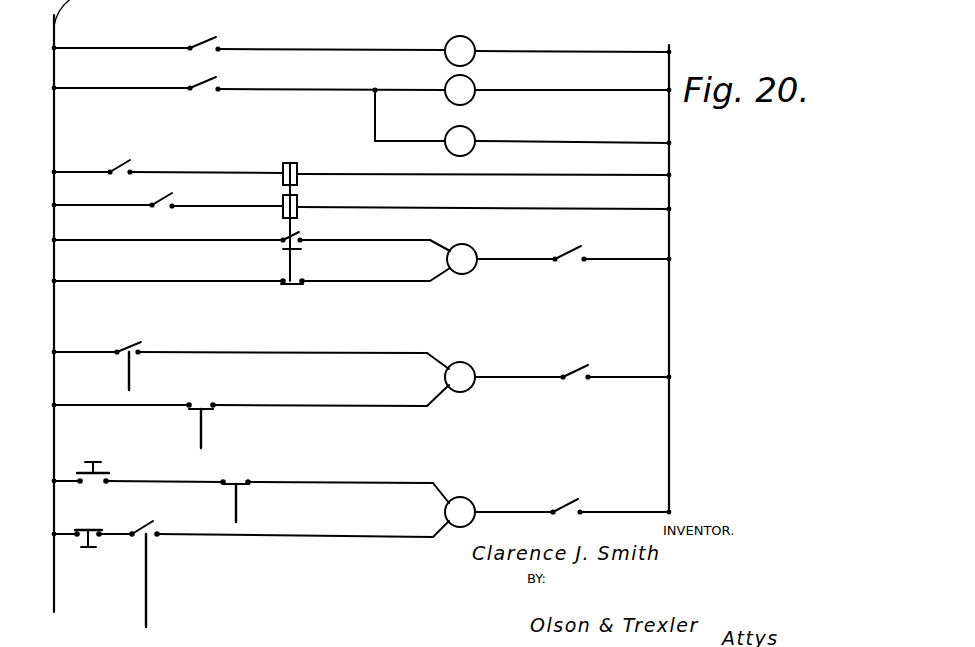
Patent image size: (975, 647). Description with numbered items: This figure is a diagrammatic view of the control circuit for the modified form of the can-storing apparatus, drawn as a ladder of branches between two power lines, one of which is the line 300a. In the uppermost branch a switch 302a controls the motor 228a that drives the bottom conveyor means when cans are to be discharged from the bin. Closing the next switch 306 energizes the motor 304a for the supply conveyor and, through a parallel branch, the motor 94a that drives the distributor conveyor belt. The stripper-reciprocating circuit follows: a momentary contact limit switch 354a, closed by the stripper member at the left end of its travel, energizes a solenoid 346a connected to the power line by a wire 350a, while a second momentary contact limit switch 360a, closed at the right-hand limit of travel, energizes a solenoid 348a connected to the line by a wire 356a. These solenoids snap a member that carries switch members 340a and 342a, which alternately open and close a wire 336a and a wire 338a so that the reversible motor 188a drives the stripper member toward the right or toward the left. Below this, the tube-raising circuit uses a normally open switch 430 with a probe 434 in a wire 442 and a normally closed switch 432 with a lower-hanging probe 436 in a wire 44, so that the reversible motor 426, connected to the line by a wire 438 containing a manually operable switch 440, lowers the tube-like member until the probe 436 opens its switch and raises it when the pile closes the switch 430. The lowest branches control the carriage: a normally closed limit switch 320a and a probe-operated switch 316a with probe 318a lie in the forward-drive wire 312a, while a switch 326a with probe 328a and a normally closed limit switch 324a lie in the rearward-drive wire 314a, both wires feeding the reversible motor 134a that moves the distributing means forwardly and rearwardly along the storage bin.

The power line 300a is at (672, 57).
The switch 302a is at (219, 45).
The motor 228a is at (475, 44).
The switch 306 is at (219, 85).
The motor 304a is at (475, 83).
The motor 94a is at (475, 134).
The momentary contact limit switch 354a is at (126, 162).
The solenoid 346a is at (298, 168).
The wire 350a is at (432, 180).
The momentary contact limit switch 360a is at (170, 200).
The solenoid 348a is at (298, 203).
The wire 356a is at (540, 210).
The switch member 340a is at (282, 240).
The switch member 342a is at (282, 280).
The wire 336a is at (330, 242).
The wire 338a is at (346, 285).
The reversible motor 188a is at (477, 250).
The switch 430 is at (138, 348).
The probe 434 is at (131, 373).
The wire 442 is at (250, 352).
The switch 432 is at (213, 402).
The probe 436 is at (203, 424).
The wire 44 is at (325, 408).
The reversible motor 426 is at (472, 366).
The wire 438 is at (513, 380).
The manually operable switch 440 is at (574, 372).
The normally closed limit switch 320a is at (100, 470).
The switch 316a is at (242, 479).
The probe 318a is at (238, 508).
The wire 312a is at (353, 480).
The switch 326a is at (170, 512).
The normally closed limit switch 324a is at (96, 545).
The probe 328a is at (148, 575).
The wire 314a is at (298, 537).
The reversible motor 134a is at (470, 502).